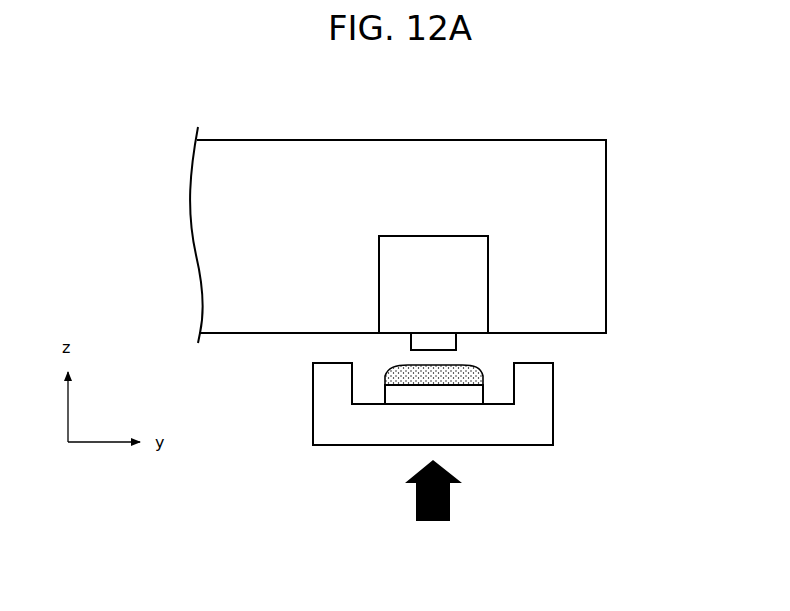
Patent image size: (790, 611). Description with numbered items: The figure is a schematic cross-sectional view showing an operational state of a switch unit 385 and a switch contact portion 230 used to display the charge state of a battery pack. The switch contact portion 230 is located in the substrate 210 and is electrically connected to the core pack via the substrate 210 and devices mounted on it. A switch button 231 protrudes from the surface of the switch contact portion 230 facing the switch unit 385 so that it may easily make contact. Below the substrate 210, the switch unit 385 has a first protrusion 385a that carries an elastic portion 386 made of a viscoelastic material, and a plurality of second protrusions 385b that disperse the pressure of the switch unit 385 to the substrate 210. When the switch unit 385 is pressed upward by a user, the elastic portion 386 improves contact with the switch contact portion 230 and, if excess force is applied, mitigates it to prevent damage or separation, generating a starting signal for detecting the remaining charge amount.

The substrate 210 is at (600, 262).
The switch contact portion 230 is at (482, 247).
The switch button 231 is at (427, 342).
The switch unit 385 is at (560, 450).
The first protrusion 385a is at (463, 390).
The second protrusions 385b is at (538, 372).
The elastic portion 386 is at (460, 367).